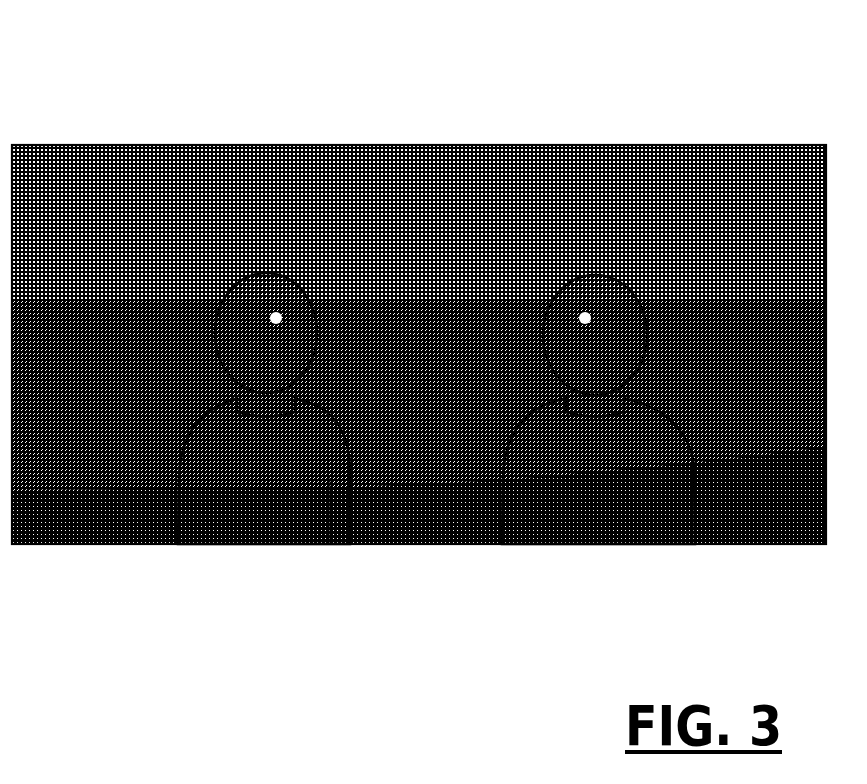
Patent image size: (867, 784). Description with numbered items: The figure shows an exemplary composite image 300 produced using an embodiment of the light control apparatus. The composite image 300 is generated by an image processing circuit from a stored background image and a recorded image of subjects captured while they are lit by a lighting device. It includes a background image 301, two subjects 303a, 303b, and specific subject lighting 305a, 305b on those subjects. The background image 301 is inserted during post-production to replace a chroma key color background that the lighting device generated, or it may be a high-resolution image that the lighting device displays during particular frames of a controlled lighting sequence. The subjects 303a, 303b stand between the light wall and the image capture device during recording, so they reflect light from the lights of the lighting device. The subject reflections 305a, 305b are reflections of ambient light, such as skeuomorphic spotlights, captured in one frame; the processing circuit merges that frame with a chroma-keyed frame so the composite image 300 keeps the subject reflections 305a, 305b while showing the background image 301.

The composite image 300 is at (651, 48).
The background image 301 is at (420, 145).
The subject 303a is at (282, 455).
The subject 303b is at (585, 470).
The subject lighting 305a is at (285, 305).
The subject lighting 305b is at (584, 320).